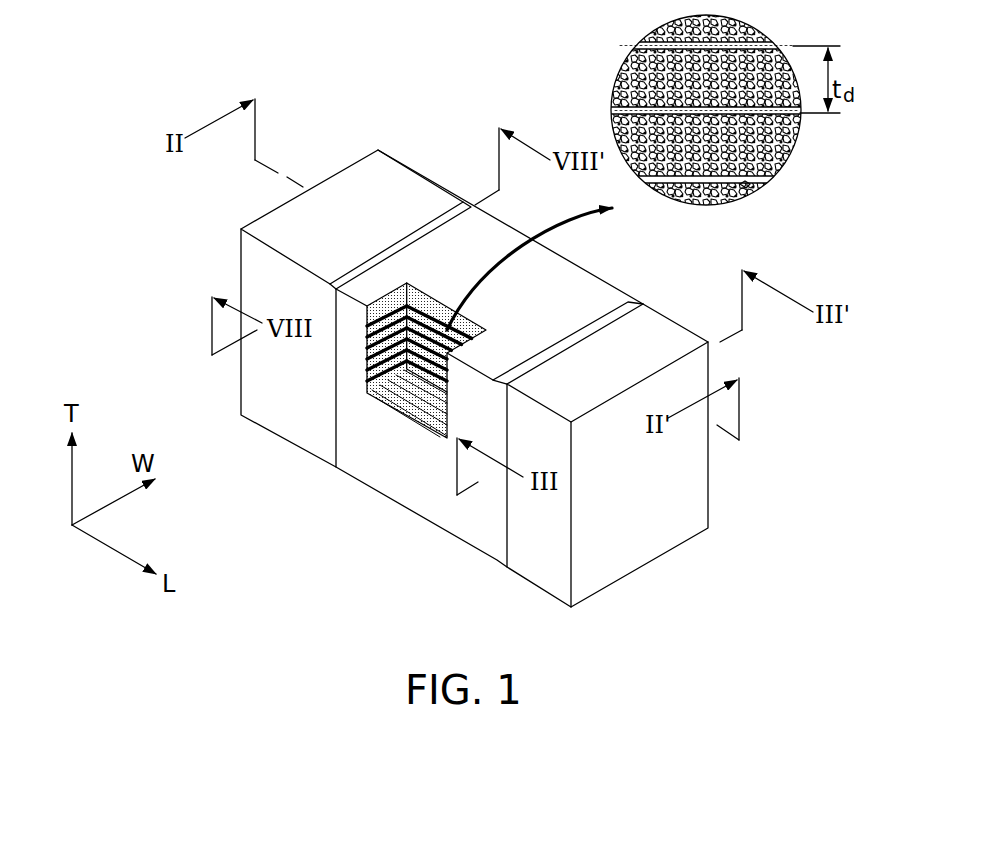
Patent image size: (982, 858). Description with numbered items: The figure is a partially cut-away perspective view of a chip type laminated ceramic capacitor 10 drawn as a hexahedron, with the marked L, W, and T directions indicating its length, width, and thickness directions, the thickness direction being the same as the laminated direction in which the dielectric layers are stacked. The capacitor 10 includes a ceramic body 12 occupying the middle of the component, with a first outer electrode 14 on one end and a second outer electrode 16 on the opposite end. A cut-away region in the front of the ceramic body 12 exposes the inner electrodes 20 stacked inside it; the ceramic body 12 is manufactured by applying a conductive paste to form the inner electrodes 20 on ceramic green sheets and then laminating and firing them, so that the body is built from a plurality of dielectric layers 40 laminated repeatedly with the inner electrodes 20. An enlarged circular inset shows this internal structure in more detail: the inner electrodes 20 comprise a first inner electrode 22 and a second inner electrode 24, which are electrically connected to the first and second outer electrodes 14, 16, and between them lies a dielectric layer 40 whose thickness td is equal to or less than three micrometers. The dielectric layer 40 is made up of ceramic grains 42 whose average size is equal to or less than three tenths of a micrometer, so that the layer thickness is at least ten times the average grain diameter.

The chip type laminated ceramic capacitor 10 is at (153, 78).
The ceramic body 12 is at (605, 302).
The first outer electrode 14 is at (237, 282).
The second outer electrode 16 is at (649, 534).
The inner electrodes 20 is at (367, 337).
The first inner electrode 22 is at (632, 110).
The second inner electrode 24 is at (630, 46).
The dielectric layer 40 is at (763, 152).
The ceramic grain 42 is at (748, 187).